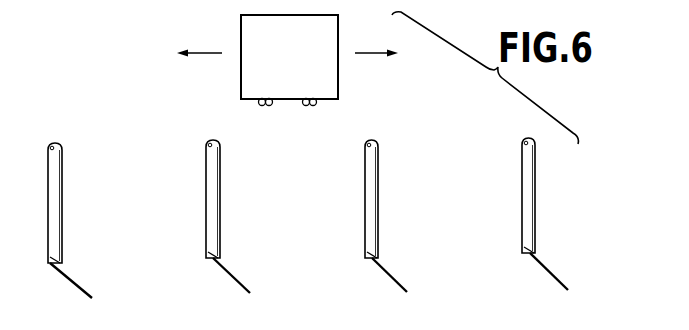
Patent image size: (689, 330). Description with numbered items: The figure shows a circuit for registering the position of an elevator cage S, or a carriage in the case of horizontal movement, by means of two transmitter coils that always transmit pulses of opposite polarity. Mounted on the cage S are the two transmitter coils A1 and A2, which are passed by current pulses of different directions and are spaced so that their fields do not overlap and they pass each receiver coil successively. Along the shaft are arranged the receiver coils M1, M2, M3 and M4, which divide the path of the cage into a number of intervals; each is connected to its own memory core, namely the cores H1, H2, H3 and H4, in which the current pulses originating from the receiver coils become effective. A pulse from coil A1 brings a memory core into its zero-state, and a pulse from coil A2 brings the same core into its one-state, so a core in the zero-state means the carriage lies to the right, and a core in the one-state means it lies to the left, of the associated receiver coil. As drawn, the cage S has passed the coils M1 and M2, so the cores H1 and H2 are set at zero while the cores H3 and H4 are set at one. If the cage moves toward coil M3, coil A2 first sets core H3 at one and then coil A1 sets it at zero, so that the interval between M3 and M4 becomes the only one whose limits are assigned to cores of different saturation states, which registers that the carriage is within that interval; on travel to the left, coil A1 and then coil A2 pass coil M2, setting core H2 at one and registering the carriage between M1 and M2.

The cage S is at (289, 57).
The transmitter coil A1 is at (263, 91).
The transmitter coil A2 is at (310, 91).
The receiver coil M1 is at (56, 143).
The receiver coil M2 is at (211, 140).
The receiver coil M3 is at (370, 140).
The receiver coil M4 is at (527, 138).
The memory core H1 is at (66, 270).
The memory core H2 is at (228, 266).
The memory core H3 is at (384, 268).
The memory core H4 is at (542, 265).